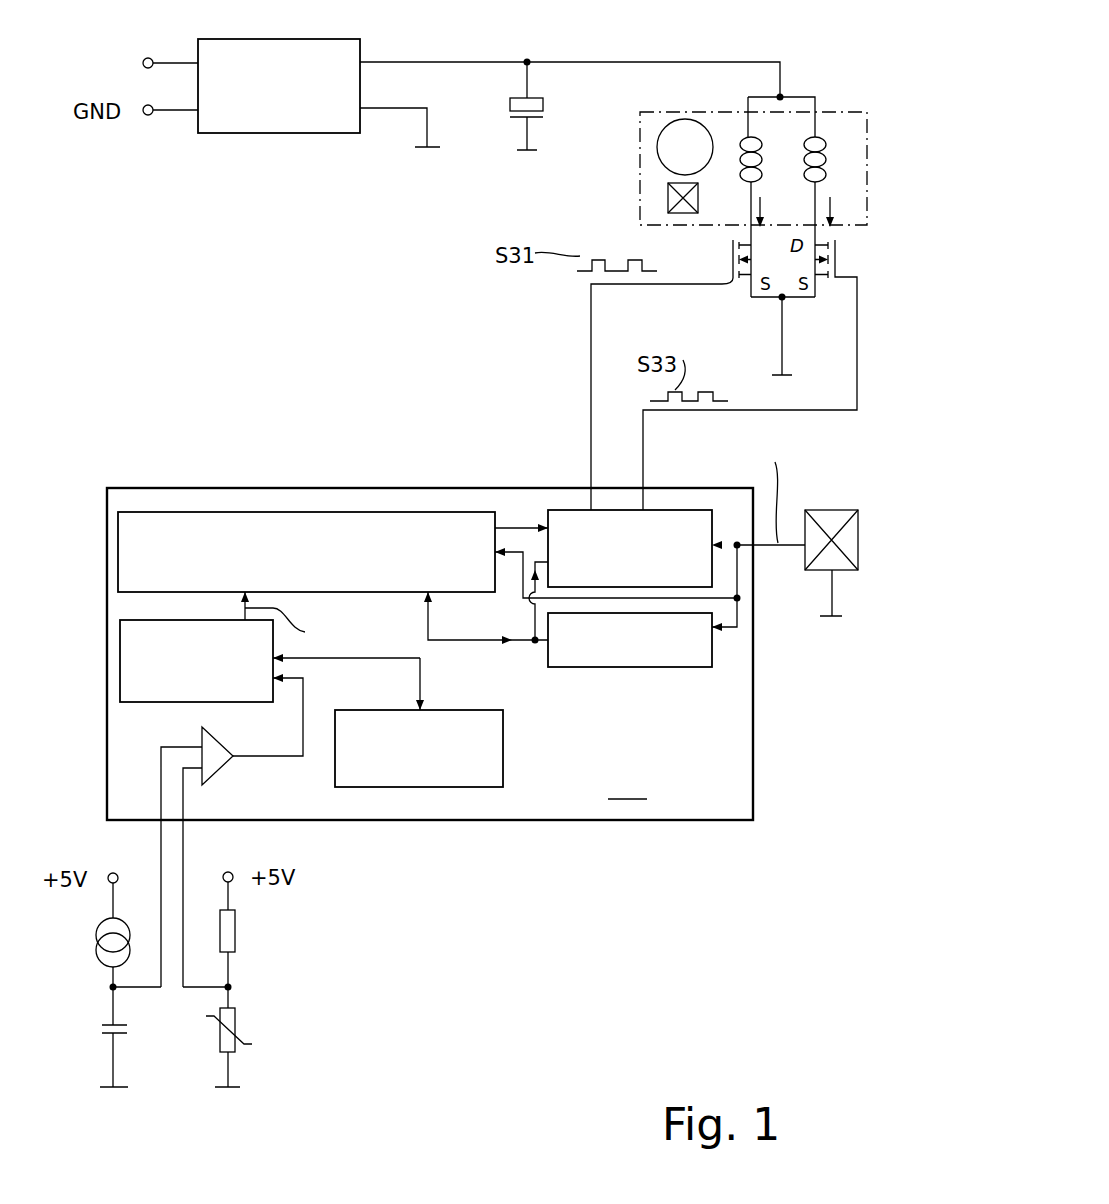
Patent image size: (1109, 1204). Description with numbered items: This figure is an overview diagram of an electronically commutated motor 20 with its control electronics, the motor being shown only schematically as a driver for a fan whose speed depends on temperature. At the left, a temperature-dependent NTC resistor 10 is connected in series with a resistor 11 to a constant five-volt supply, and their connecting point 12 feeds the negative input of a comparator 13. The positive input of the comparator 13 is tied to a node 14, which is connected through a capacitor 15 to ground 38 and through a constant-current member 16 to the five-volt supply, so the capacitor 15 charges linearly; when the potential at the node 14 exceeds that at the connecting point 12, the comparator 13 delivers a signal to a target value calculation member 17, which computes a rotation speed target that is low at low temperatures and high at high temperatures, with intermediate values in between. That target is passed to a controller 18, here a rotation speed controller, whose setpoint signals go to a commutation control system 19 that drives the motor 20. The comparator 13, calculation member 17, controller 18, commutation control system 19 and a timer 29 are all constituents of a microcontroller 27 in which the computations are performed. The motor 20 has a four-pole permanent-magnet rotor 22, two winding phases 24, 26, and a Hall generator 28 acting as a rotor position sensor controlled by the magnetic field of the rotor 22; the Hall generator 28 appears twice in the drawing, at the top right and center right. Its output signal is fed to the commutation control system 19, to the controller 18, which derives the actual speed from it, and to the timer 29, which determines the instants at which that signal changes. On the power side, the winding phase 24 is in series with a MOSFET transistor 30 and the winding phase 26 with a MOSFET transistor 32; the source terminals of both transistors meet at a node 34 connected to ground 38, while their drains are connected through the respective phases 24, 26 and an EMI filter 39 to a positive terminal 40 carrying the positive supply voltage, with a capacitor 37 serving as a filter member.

The NTC resistor 10 is at (235, 1010).
The resistor 11 is at (235, 933).
The connecting point 12 is at (230, 987).
The comparator 13 is at (223, 763).
The node 14 is at (110, 987).
The capacitor 15 is at (127, 1032).
The constant-current member 16 is at (97, 935).
The target value calculation member 17 is at (133, 663).
The controller 18 is at (178, 527).
The commutation control system 19 is at (567, 527).
The electronically commutated motor 20 is at (672, 115).
The permanent-magnet rotor 22 is at (640, 148).
The winding phase 24 is at (745, 138).
The winding phase 26 is at (820, 138).
The microcontroller 27 is at (610, 820).
The Hall generator 28 is at (668, 203).
The timer 29 is at (653, 650).
The MOSFET transistor 30 is at (730, 254).
The MOSFET transistor 32 is at (838, 252).
The node 34 is at (784, 299).
The capacitor 37 is at (537, 103).
The ground 38 is at (527, 137).
The EMI filter 39 is at (270, 116).
The positive terminal 40 is at (148, 58).